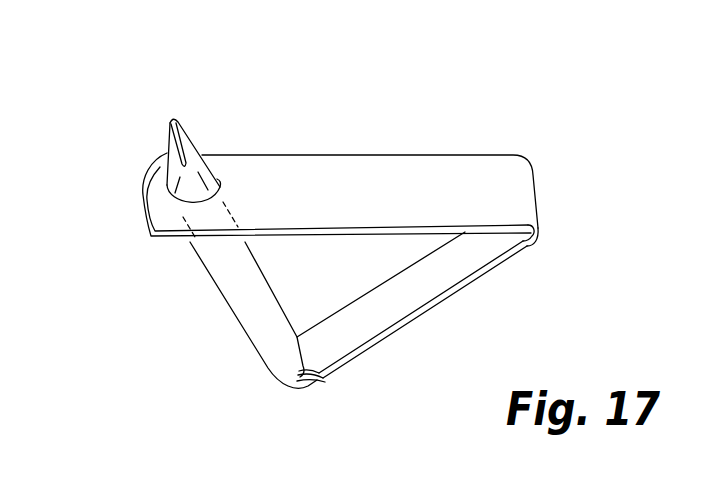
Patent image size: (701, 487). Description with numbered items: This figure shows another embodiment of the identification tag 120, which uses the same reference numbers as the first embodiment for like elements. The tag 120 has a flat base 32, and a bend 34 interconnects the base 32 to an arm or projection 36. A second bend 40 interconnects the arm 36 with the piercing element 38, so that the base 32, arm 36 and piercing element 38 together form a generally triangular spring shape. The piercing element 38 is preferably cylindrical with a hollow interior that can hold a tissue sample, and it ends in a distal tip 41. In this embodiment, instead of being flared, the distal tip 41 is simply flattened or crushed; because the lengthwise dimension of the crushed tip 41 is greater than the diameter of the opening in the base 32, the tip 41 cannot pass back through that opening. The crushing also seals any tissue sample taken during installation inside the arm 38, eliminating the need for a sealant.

The tag 120 is at (100, 140).
The base 32 is at (370, 215).
The bend 34 is at (538, 197).
The arm 36 is at (430, 282).
The piercing element 38 is at (257, 328).
The bend 40 is at (322, 383).
The distal tip 41 is at (185, 111).